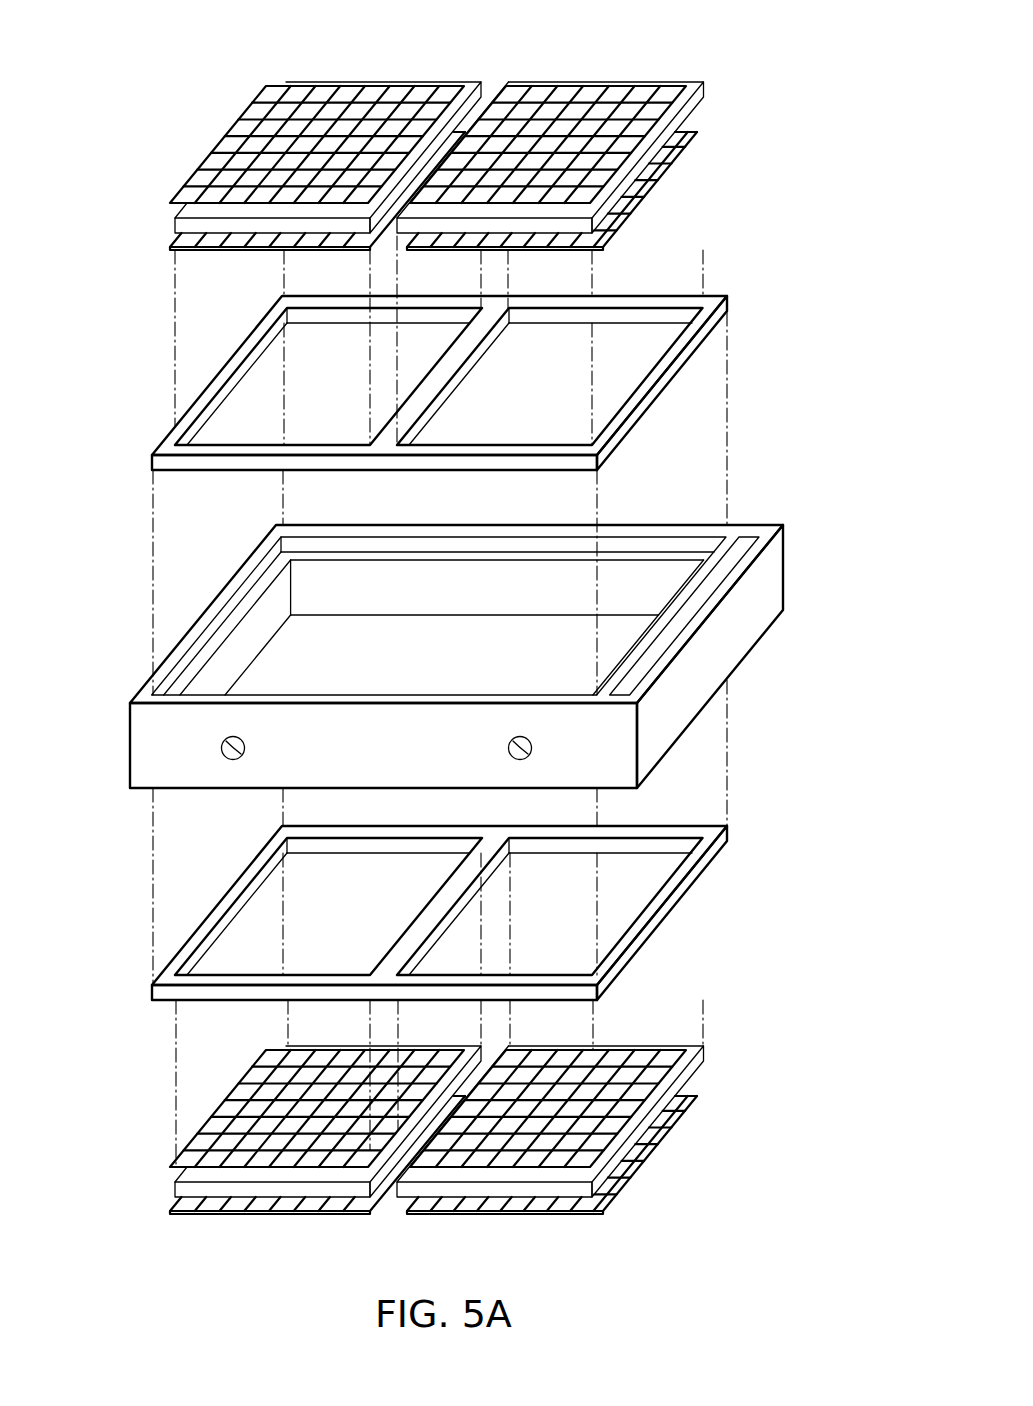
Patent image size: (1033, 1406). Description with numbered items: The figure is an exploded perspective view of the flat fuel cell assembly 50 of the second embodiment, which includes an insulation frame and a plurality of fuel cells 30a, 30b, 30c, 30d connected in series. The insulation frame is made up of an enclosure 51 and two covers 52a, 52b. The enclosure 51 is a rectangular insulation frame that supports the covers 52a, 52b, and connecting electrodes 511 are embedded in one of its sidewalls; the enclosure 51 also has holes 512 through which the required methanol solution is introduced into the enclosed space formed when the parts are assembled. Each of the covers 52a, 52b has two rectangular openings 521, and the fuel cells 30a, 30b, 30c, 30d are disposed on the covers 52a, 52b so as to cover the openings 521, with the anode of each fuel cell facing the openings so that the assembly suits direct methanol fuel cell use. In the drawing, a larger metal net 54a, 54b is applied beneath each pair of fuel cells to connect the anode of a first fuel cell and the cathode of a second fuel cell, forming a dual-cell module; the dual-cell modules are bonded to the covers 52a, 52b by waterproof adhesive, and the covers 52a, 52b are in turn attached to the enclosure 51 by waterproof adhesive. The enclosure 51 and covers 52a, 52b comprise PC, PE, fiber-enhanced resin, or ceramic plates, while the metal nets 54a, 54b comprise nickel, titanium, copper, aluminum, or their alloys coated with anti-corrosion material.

The flat fuel cell assembly 50 is at (192, 56).
The fuel cell 30a is at (468, 82).
The fuel cell 30b is at (525, 82).
The fuel cell 30c is at (513, 1192).
The fuel cell 30d is at (277, 1192).
The metal net 54a is at (706, 113).
The metal net 54b is at (700, 1083).
The cover 52a is at (652, 395).
The cover 52b is at (652, 925).
The rectangular opening 521 is at (650, 348).
The enclosure 51 is at (692, 697).
The connecting electrodes 511 is at (700, 600).
The hole 512 is at (222, 746).